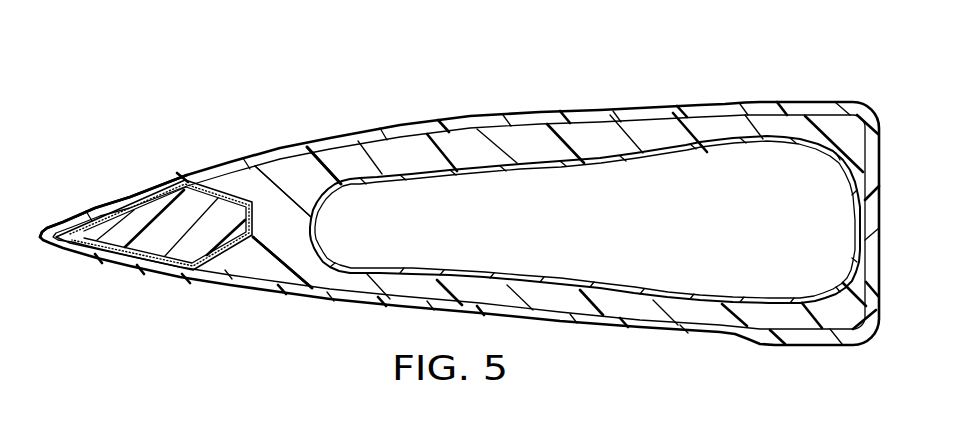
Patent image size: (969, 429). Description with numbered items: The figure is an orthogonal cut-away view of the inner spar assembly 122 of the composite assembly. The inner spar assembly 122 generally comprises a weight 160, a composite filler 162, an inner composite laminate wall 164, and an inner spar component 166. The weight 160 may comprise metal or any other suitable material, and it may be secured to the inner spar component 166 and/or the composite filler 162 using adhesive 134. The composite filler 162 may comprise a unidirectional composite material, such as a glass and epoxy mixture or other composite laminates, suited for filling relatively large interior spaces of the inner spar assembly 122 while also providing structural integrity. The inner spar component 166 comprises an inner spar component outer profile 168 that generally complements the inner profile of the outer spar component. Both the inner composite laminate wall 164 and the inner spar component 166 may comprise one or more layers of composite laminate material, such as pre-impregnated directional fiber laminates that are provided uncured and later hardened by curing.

The inner spar assembly 122 is at (459, 189).
The adhesive 134 is at (121, 190).
The weight 160 is at (118, 238).
The composite filler 162 is at (284, 165).
The inner composite laminate wall 164 is at (773, 142).
The inner spar component 166 is at (695, 112).
The inner spar component outer profile 168 is at (612, 112).